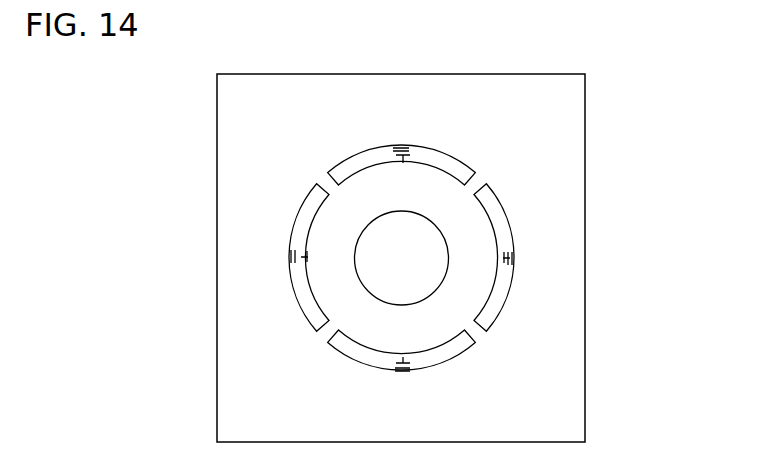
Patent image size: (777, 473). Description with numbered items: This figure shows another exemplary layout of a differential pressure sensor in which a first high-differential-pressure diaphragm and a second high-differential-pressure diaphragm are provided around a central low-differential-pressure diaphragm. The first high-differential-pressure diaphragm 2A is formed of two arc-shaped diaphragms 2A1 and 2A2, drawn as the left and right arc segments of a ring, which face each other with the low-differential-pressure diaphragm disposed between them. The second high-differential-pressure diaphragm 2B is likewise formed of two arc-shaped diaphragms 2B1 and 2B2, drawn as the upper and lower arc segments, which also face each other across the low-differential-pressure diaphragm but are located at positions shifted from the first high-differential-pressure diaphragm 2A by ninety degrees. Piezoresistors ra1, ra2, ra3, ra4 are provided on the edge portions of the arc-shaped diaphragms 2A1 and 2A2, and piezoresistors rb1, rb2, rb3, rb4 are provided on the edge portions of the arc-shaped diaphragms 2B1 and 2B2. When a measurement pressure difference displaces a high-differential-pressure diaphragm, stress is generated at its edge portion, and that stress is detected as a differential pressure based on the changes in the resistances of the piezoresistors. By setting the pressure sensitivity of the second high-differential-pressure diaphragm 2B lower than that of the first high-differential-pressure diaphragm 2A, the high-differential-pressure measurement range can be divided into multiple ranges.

The first high-differential-pressure diaphragm 2A is at (92, 147).
The arc-shaped diaphragm 2A1 is at (303, 215).
The arc-shaped diaphragm 2A2 is at (495, 302).
The second high-differential-pressure diaphragm 2B is at (694, 110).
The arc-shaped diaphragm 2B1 is at (445, 163).
The arc-shaped diaphragm 2B2 is at (452, 348).
The piezoresistor ra1 is at (290, 258).
The piezoresistor ra2 is at (312, 253).
The piezoresistor ra3 is at (504, 259).
The piezoresistor ra4 is at (516, 258).
The piezoresistor rb1 is at (401, 145).
The piezoresistor rb2 is at (403, 163).
The piezoresistor rb3 is at (402, 357).
The piezoresistor rb4 is at (403, 373).